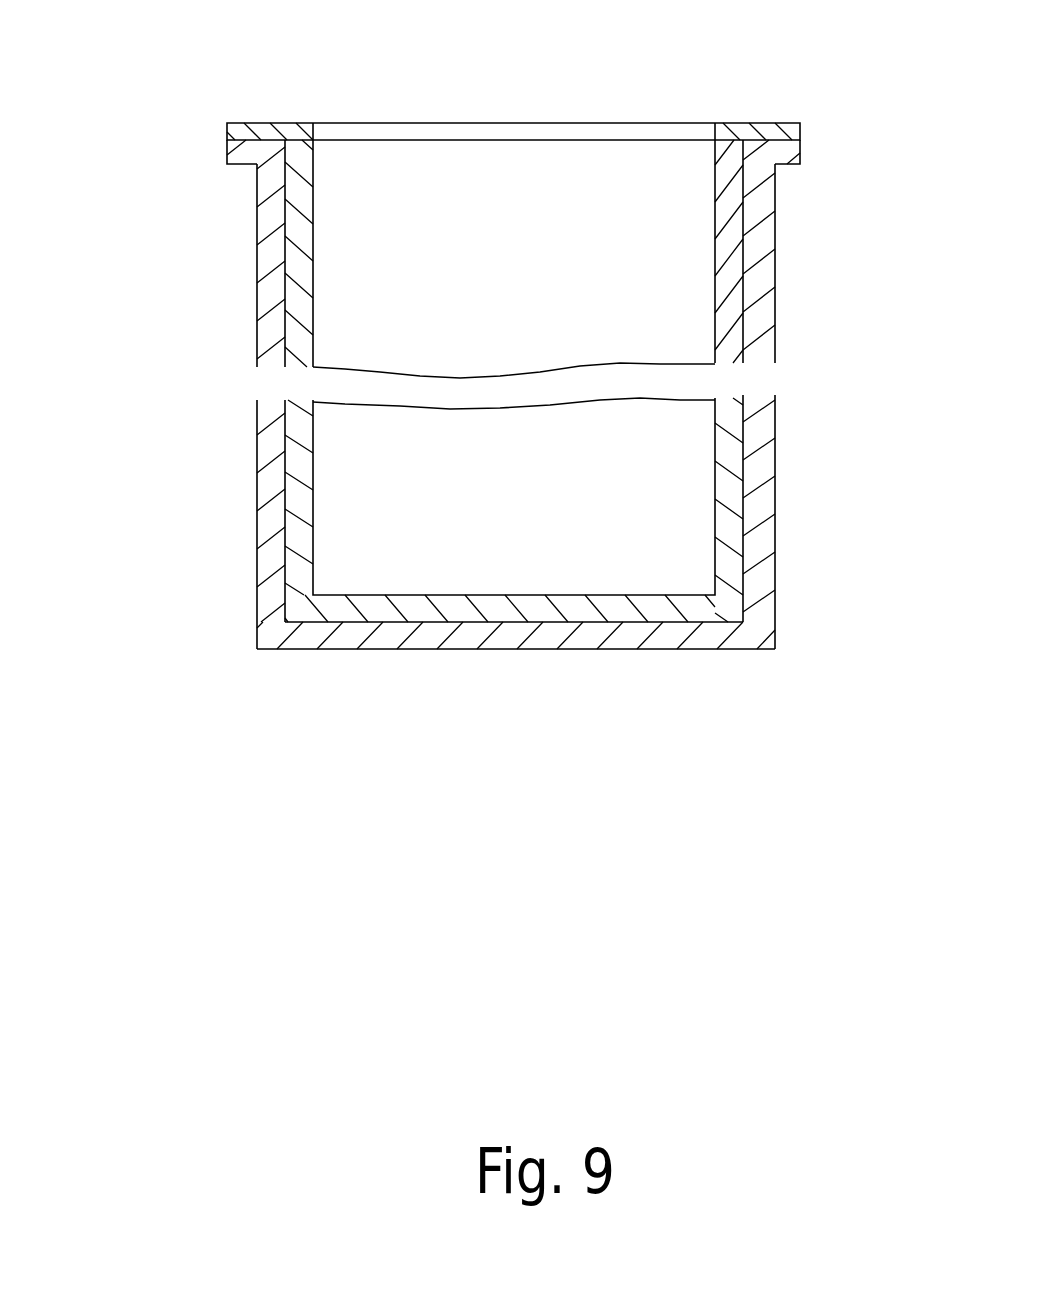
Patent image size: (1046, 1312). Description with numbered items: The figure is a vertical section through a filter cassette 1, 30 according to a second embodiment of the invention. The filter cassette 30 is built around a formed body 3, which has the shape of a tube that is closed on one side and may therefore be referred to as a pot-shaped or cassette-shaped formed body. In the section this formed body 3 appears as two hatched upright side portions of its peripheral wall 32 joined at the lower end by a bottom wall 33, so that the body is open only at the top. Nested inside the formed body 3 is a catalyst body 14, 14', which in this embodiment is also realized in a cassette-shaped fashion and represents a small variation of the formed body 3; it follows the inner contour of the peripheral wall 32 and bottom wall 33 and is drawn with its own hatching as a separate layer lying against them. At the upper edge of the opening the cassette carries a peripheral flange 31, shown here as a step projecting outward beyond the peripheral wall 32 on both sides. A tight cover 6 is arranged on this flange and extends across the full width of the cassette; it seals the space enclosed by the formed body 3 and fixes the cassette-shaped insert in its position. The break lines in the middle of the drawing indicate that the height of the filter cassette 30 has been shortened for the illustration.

The container 1 is at (248, 341).
The filter cassette 30 is at (514, 386).
The formed body 3 is at (258, 508).
The tight cover 6 is at (750, 124).
The catalyst body 14 is at (606, 245).
The catalyst body 14' is at (514, 510).
The peripheral flange 31 is at (227, 165).
The peripheral wall 32 is at (760, 450).
The bottom wall 33 is at (658, 640).